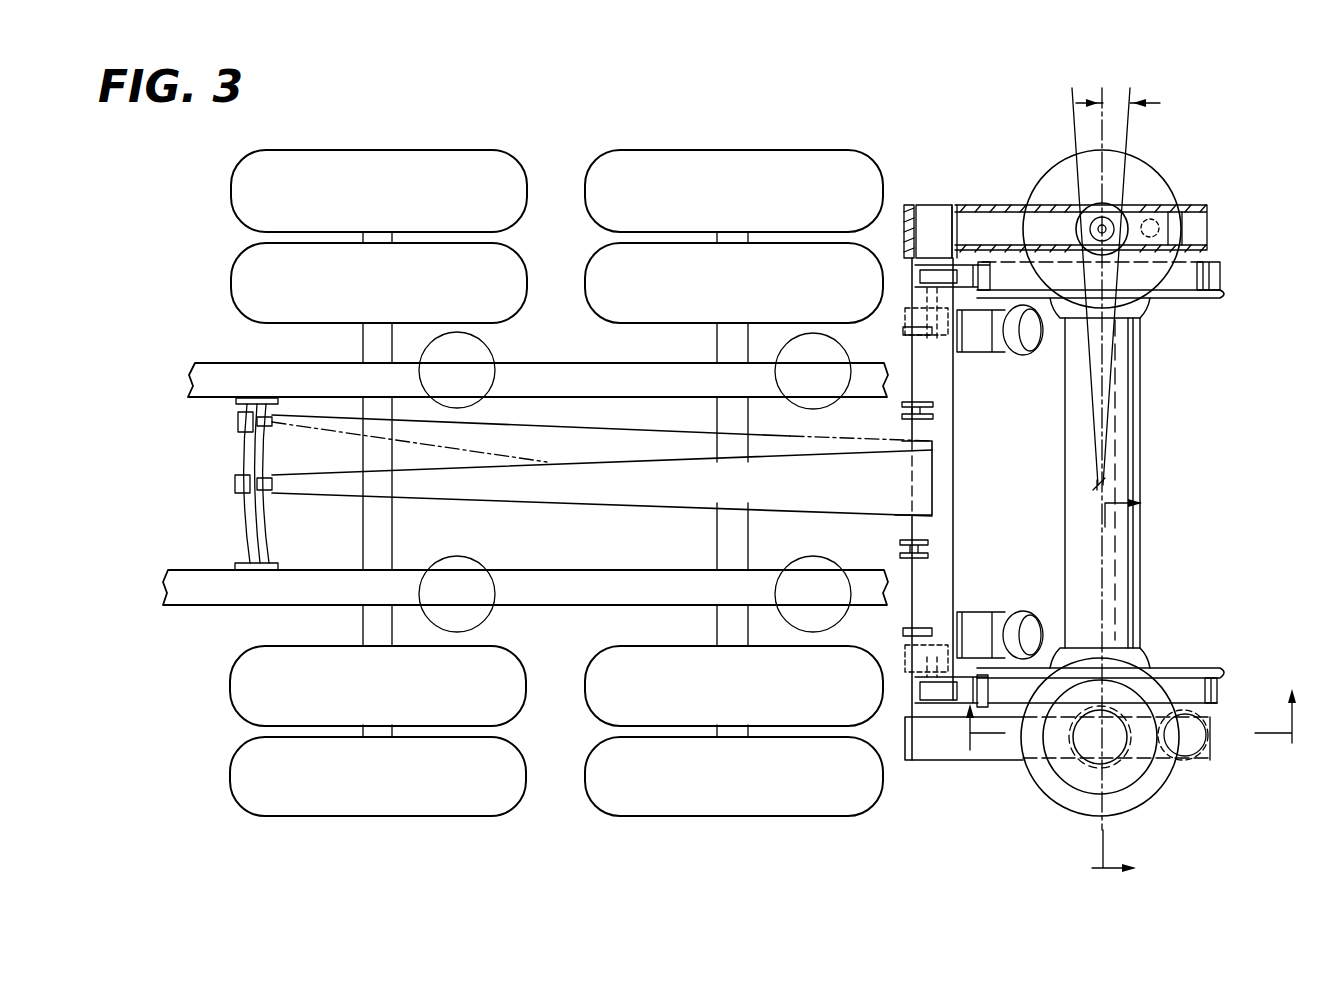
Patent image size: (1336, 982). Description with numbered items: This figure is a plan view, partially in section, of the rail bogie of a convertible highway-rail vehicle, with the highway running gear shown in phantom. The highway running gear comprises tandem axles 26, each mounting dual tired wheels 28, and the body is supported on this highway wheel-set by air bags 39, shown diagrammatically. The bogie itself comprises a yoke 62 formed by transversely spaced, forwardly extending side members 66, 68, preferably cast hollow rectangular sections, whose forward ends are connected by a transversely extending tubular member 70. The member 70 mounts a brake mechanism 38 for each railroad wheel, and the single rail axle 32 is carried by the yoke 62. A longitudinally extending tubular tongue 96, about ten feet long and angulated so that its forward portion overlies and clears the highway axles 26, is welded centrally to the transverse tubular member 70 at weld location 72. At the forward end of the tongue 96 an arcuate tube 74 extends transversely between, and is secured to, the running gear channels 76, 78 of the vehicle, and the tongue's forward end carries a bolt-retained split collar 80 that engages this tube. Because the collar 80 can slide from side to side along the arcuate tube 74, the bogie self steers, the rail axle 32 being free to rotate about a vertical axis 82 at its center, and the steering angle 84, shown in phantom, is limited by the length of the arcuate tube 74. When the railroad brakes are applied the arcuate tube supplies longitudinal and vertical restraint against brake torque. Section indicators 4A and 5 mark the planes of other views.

The dual tired wheels 28 is at (433, 158).
The tandem axles 26 is at (377, 330).
The air bags 39 is at (470, 348).
The running gear channel 76 is at (267, 382).
The running gear channel 78 is at (218, 597).
The arcuate tube 74 is at (262, 528).
The split collar 80 is at (243, 478).
The tongue 96 is at (636, 455).
The weld location 72 is at (935, 458).
The transversely extending tubular member 70 is at (952, 517).
The side member 66 is at (996, 196).
The yoke 62 is at (1174, 440).
The rail axle 32 is at (1148, 370).
The brake mechanism 38 is at (989, 351).
The steering angle 84 is at (1115, 108).
The vertical axis 82 is at (1099, 482).
The section line 5 is at (1129, 687).
The section line 4A is at (1114, 709).
The side member 68 is at (987, 755).